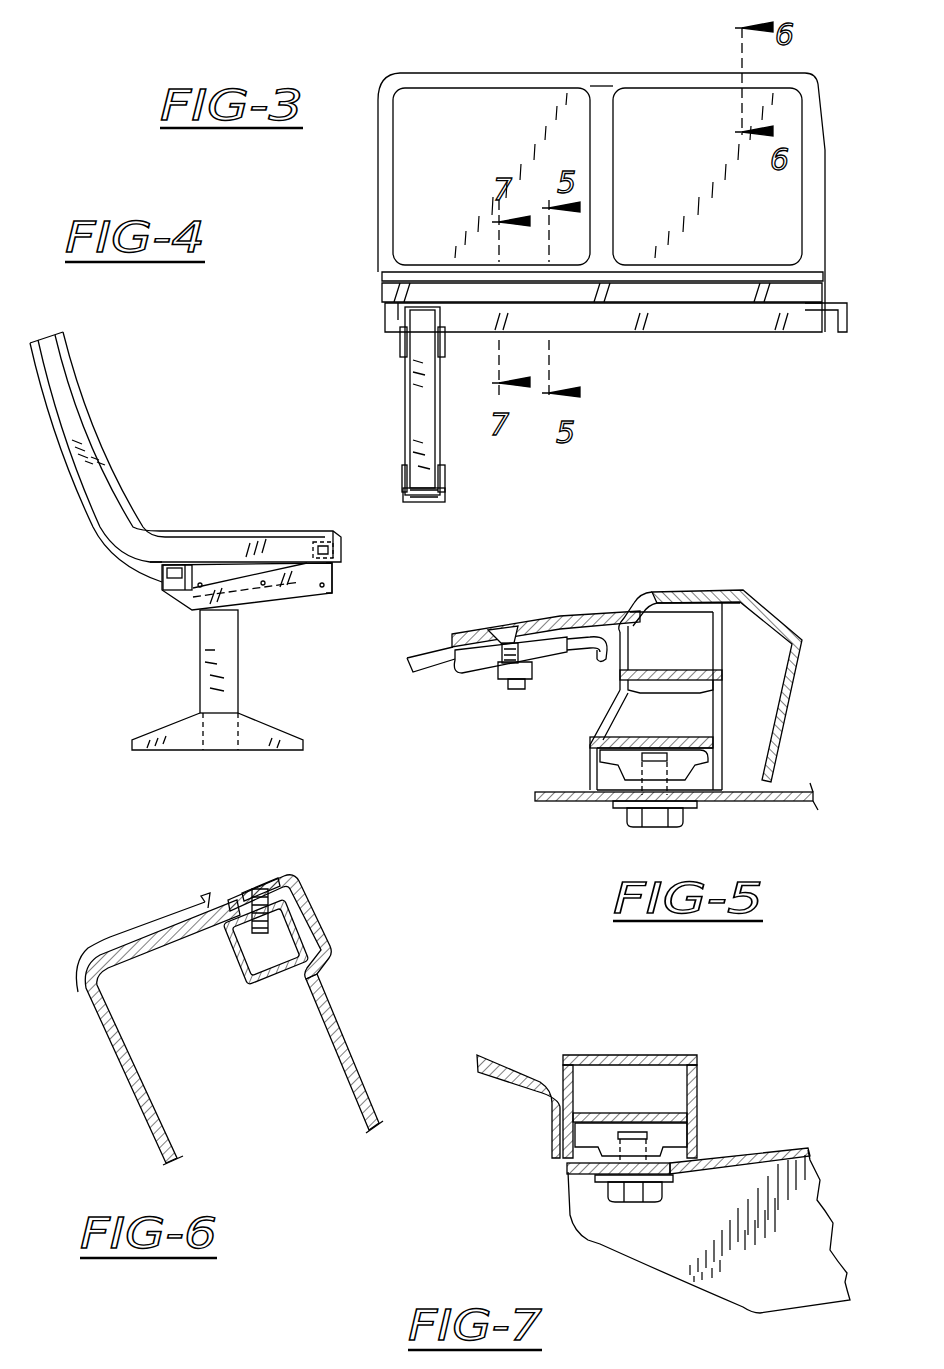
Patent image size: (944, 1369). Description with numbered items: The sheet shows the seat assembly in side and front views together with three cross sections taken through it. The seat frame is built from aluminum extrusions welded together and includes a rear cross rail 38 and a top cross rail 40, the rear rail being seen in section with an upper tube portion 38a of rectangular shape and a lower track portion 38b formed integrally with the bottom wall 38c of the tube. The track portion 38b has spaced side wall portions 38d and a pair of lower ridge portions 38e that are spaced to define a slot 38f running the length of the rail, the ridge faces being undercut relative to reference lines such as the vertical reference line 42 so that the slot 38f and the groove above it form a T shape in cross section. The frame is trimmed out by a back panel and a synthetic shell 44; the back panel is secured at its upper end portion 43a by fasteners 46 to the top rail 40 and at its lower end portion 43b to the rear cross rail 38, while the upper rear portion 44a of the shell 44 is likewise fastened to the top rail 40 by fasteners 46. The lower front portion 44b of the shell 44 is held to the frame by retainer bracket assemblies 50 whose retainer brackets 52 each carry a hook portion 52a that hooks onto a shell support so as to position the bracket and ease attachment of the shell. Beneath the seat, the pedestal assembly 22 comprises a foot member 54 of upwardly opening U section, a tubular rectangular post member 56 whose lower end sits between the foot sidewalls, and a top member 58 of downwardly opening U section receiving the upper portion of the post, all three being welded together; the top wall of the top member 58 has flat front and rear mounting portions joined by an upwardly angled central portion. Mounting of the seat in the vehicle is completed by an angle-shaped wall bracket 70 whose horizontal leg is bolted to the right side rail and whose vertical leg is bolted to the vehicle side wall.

In FIG. 4, the pedestal assembly 22 is at (158, 598).
In FIG. 3, the rear cross rail 38 is at (722, 334).
In FIG. 4, the rear cross rail 38 is at (162, 582).
In FIG. 7, the rear cross rail 38 is at (655, 1133).
In FIG. 7, the upper tube portion 38a is at (665, 1046).
In FIG. 7, the lower track portion 38b is at (718, 1120).
In FIG. 7, the bottom wall 38c is at (663, 1108).
In FIG. 7, the side wall portions 38d is at (573, 1140).
In FIG. 7, the lower ridge portions 38e is at (575, 1163).
In FIG. 7, the slot 38f is at (633, 1174).
In FIG. 6, the top cross rail 40 is at (247, 987).
In FIG. 6, the vertical reference line 42 is at (150, 1143).
In FIG. 6, the upper end portion 43a is at (80, 983).
In FIG. 7, the lower end portion 43b is at (553, 1117).
In FIG. 6, the shell 44 is at (333, 1017).
In FIG. 6, the upper rear portion 44a is at (327, 943).
In FIG. 5, the lower front portion 44b is at (800, 680).
In FIG. 6, the fasteners 46 is at (253, 883).
In FIG. 5, the retainer bracket assemblies 50 is at (520, 615).
In FIG. 5, the retainer bracket 52 is at (477, 673).
In FIG. 5, the hook portion 52a is at (590, 673).
In FIG. 3, the foot member 54 is at (405, 484).
In FIG. 4, the foot member 54 is at (280, 730).
In FIG. 3, the post member 56 is at (440, 432).
In FIG. 4, the post member 56 is at (240, 690).
In FIG. 4, the top member 58 is at (178, 655).
In FIG. 3, the wall bracket 70 is at (858, 306).
In FIG. 4, the wall bracket 70 is at (331, 595).